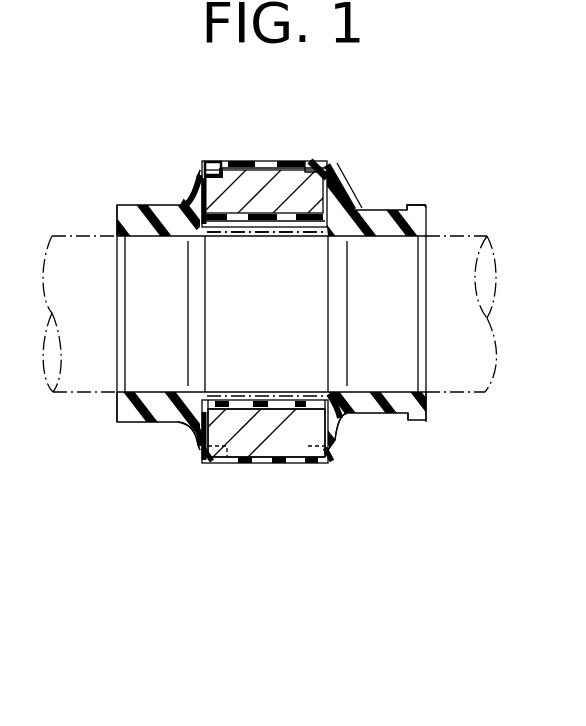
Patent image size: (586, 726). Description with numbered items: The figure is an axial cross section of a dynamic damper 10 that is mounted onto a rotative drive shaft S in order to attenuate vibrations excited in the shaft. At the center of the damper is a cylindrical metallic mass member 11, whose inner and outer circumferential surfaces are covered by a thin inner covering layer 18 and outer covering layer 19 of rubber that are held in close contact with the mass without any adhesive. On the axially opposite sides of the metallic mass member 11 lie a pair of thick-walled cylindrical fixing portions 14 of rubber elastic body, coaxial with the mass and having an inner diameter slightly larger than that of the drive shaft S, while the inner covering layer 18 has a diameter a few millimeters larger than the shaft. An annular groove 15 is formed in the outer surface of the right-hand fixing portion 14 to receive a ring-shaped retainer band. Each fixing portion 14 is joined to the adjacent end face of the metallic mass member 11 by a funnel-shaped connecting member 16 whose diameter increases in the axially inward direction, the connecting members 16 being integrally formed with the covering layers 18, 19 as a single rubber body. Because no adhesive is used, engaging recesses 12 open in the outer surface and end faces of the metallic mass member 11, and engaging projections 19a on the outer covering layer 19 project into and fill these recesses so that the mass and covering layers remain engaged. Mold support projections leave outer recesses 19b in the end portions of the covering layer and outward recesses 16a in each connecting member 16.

The dynamic damper 10 is at (328, 153).
The metallic mass member 11 is at (318, 199).
The engaging recess 12 is at (197, 190).
The fixing portion 14 is at (132, 213).
The annular groove 15 is at (402, 206).
The connecting member 16 is at (185, 205).
The outward recess 16a is at (200, 448).
The inner covering layer 18 is at (267, 228).
The outer covering layer 19 is at (253, 163).
The engaging projection 19a is at (214, 161).
The outer recess 19b is at (226, 460).
The drive shaft S is at (470, 235).